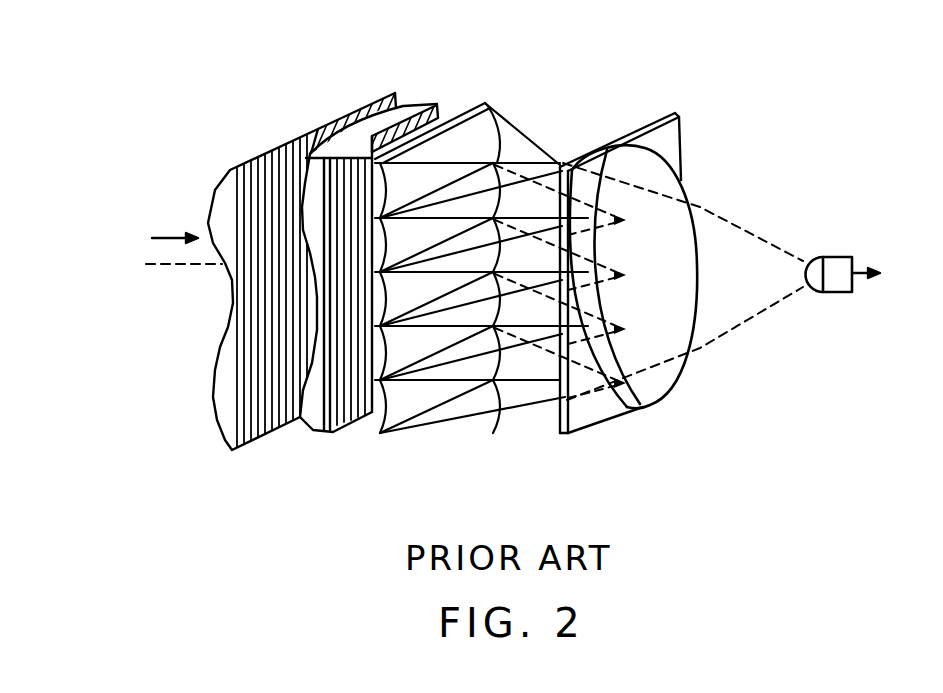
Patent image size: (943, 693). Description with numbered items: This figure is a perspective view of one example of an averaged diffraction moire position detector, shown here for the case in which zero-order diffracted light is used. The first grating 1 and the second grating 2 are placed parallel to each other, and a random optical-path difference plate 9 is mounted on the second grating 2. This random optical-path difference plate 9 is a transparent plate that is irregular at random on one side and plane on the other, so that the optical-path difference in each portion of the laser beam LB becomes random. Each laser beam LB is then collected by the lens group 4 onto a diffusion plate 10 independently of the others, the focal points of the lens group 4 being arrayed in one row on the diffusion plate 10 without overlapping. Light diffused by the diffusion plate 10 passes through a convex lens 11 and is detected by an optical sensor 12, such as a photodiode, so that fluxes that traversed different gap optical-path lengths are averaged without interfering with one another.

The first grating 1 is at (268, 155).
The random optical-path difference plate 9 is at (357, 130).
The second grating 2 is at (417, 110).
The lens group 4 is at (473, 120).
The diffusion plate 10 is at (578, 162).
The convex lens 11 is at (643, 150).
The optical sensor 12 is at (842, 258).
The laser beam LB is at (167, 276).